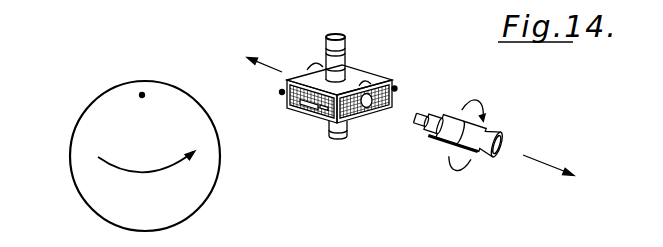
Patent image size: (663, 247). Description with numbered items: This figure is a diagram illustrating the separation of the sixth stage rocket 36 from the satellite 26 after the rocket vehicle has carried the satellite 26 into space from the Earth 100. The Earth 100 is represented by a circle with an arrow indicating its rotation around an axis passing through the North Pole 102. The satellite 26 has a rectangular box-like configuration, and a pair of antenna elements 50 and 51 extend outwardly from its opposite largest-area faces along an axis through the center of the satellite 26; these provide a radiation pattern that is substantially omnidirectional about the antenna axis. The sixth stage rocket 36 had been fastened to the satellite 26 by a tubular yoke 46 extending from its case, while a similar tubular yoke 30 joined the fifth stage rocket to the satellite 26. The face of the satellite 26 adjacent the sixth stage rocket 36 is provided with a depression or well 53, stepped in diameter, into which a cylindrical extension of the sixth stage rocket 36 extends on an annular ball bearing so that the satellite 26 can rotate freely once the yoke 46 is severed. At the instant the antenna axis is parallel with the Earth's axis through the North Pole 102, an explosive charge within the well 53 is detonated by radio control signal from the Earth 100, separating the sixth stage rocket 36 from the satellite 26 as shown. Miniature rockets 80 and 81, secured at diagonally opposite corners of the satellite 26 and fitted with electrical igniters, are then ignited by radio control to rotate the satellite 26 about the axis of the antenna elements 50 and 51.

The Earth 100 is at (77, 140).
The North Pole 102 is at (142, 94).
The satellite 26 is at (355, 72).
The tubular yoke 30 is at (315, 65).
The sixth stage rocket 36 is at (450, 122).
The tubular yoke 46 is at (379, 77).
The antenna element 50 is at (341, 39).
The antenna element 51 is at (335, 139).
The well 53 is at (366, 107).
The miniature rocket 80 is at (280, 94).
The miniature rocket 81 is at (398, 88).